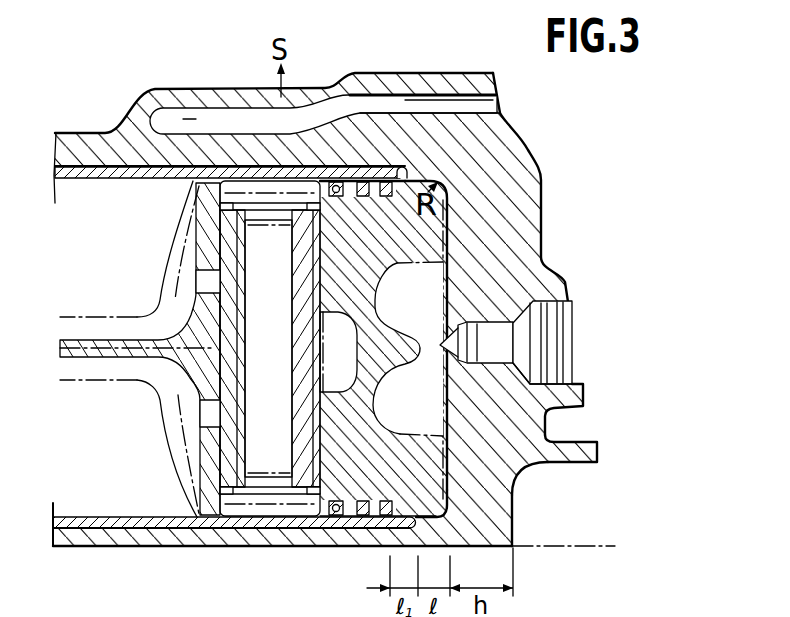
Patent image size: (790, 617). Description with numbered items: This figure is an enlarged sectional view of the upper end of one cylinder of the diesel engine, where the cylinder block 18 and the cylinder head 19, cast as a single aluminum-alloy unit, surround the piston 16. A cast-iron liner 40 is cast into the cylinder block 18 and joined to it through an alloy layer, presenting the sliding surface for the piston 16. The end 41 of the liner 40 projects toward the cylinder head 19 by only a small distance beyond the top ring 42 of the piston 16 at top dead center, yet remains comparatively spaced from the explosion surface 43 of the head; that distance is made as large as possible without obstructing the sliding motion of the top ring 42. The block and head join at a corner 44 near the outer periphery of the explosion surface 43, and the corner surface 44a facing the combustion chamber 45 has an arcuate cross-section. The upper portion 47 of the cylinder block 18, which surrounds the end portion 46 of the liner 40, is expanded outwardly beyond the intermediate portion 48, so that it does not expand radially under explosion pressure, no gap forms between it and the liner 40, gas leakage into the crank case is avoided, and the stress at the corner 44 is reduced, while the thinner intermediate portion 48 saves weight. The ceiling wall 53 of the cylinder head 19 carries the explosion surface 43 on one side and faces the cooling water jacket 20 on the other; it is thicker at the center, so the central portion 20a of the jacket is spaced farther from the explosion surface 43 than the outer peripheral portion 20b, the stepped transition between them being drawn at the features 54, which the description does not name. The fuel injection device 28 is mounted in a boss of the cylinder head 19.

The piston 16 is at (448, 237).
The cylinder block 18 is at (110, 131).
The cylinder head 19 is at (530, 136).
The cooling water jacket 20 is at (606, 458).
The portion of the cooling water jacket adjacent to the center of the cylinder 20a is at (556, 437).
The outer peripheral portion of the cooling water jacket 20b is at (545, 476).
The fuel injection device 28 is at (515, 316).
The liner 40 is at (263, 526).
The end of the liner 41 is at (401, 517).
The top ring 42 is at (394, 521).
The explosion surface 43 is at (570, 345).
The corner portion 44 is at (449, 514).
The corner surface 44a is at (475, 550).
The combustion chamber 45 is at (427, 313).
The end portion of the liner 46 is at (403, 170).
The upper portion of the cylinder block 47 is at (383, 128).
The intermediate portion of the cylinder block 48 is at (204, 150).
The ceiling wall 53 is at (548, 383).
The fillet 54 is at (554, 418).